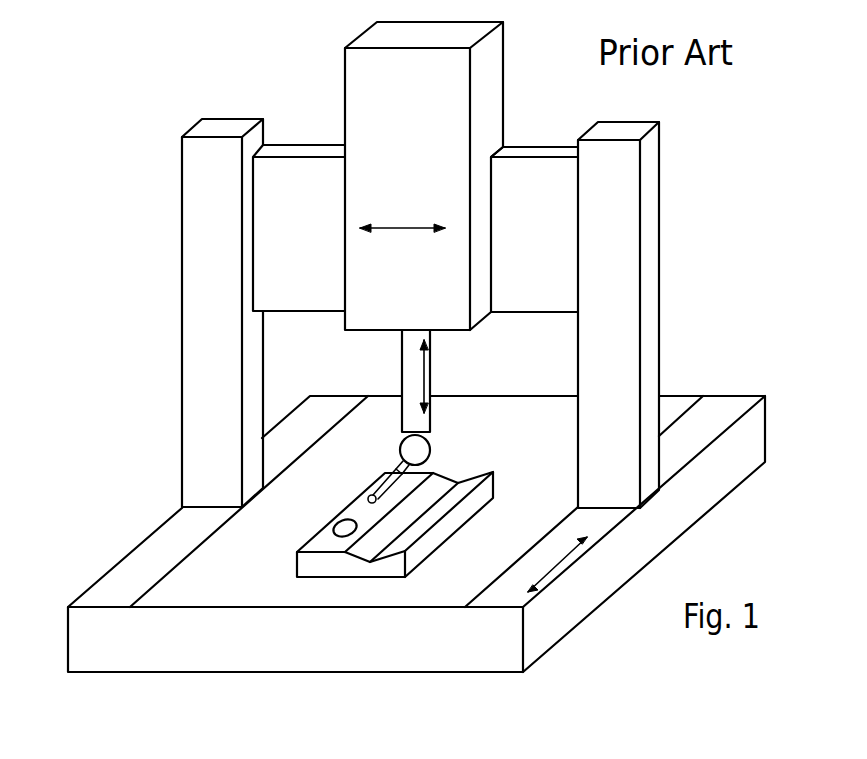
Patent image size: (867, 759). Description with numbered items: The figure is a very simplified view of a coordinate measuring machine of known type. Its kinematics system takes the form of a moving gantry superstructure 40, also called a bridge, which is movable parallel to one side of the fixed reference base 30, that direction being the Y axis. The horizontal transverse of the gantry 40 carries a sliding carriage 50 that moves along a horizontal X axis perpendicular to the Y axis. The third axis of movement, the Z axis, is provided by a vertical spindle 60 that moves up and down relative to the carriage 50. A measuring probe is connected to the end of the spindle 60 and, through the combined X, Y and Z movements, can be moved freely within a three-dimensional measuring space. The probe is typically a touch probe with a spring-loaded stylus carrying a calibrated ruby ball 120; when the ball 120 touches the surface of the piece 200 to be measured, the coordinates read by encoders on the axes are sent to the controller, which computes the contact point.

The fixed reference base 30 is at (147, 652).
The moving gantry superstructure 40 is at (197, 168).
The sliding carriage 50 is at (373, 107).
The vertical spindle 60 is at (410, 405).
The calibrated ruby ball 120 is at (368, 497).
The piece to be measured 200 is at (327, 540).